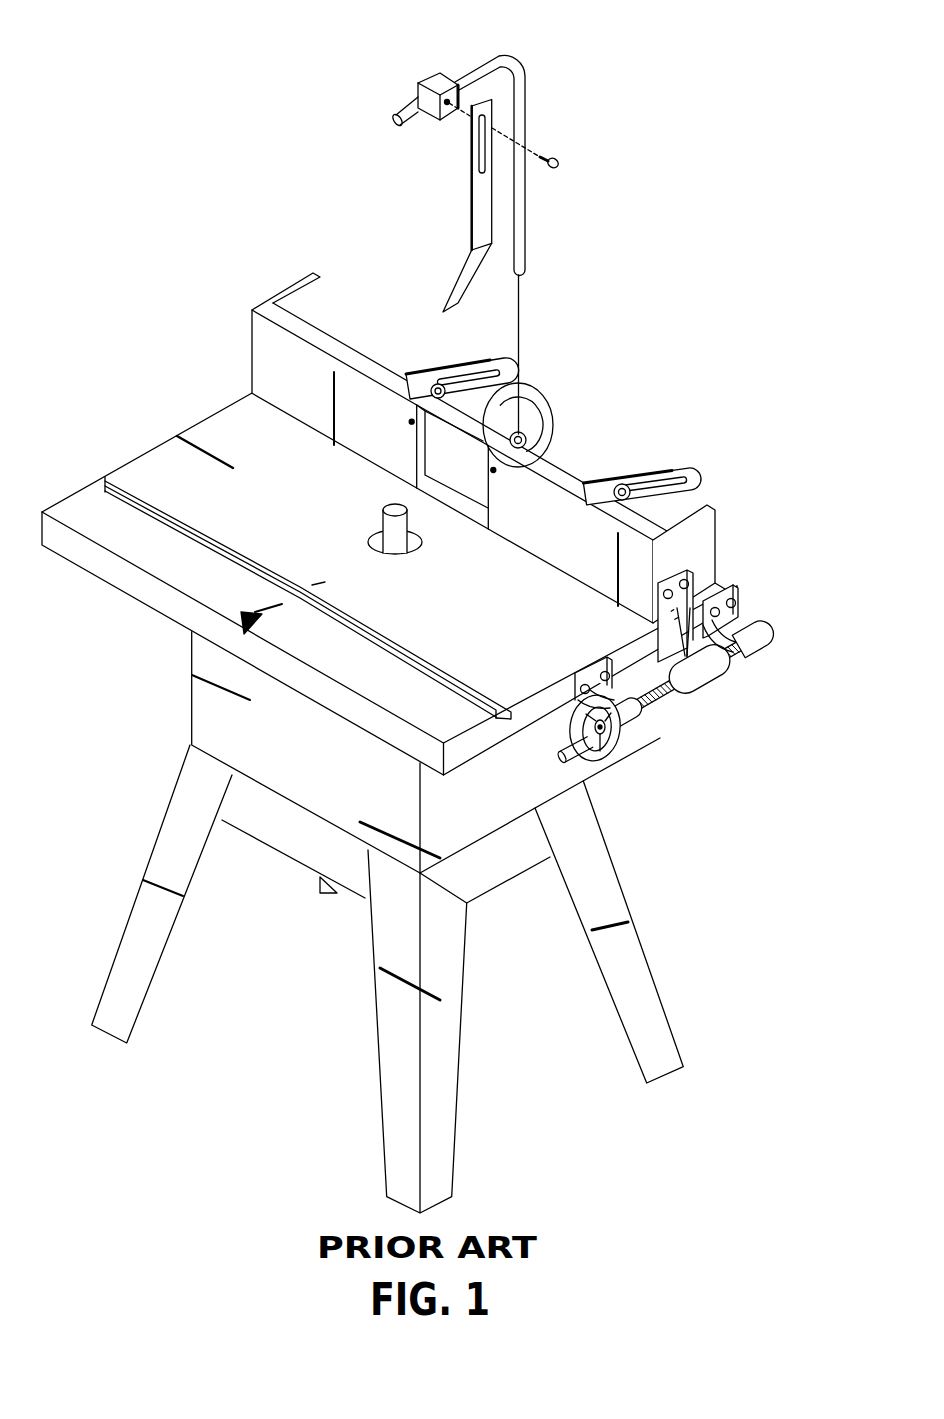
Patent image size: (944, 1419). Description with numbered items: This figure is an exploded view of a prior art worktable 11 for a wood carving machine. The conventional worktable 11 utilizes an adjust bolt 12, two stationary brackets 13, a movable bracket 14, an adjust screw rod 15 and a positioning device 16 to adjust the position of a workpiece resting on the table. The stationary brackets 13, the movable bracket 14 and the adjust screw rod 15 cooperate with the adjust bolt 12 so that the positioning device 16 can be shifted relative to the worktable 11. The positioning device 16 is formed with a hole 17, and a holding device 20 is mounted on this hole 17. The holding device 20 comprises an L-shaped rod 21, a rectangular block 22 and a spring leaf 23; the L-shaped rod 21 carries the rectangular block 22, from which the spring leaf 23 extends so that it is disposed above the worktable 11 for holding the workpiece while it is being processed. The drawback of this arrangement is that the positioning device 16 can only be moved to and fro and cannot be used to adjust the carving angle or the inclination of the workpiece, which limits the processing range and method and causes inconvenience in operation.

The worktable 11 is at (170, 568).
The adjust bolt 12 is at (447, 391).
The stationary brackets 13 is at (767, 648).
The movable bracket 14 is at (713, 682).
The adjust screw rod 15 is at (618, 763).
The positioning device 16 is at (570, 547).
The hole 17 is at (520, 436).
The holding device 20 is at (479, 219).
The L-shaped rod 21 is at (526, 100).
The rectangular block 22 is at (433, 75).
The spring leaf 23 is at (480, 210).